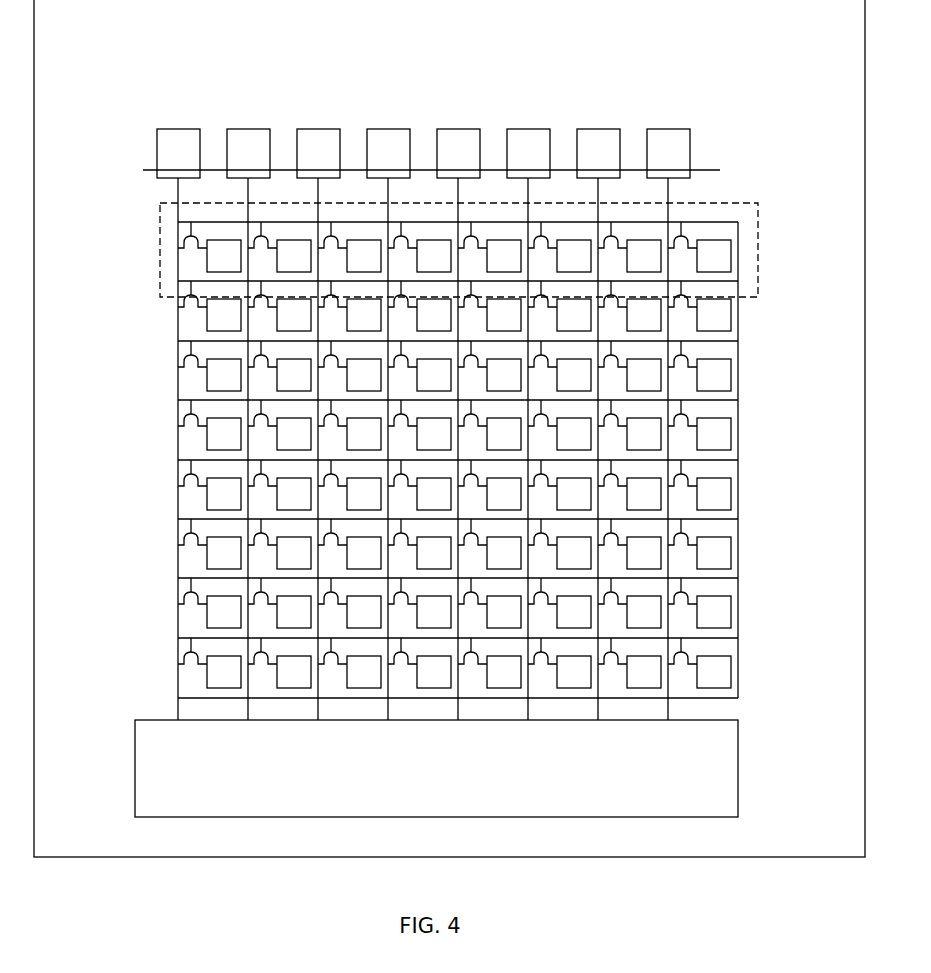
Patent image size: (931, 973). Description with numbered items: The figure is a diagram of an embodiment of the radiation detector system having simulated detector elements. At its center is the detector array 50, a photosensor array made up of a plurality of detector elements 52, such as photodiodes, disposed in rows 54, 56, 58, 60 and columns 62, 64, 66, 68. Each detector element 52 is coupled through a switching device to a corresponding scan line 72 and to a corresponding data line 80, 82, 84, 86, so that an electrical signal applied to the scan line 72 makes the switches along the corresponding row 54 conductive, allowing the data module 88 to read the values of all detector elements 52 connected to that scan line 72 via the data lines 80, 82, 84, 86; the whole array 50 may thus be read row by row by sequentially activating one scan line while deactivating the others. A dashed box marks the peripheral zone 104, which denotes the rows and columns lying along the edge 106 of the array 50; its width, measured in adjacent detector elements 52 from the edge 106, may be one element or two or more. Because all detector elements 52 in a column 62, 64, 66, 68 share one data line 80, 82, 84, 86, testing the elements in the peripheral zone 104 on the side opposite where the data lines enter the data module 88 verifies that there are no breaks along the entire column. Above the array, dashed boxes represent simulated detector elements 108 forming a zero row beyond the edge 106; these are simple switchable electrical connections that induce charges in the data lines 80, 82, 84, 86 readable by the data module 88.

The detector array 50 is at (722, 90).
The detector elements 52 is at (418, 441).
The row 54 is at (768, 257).
The row 56 is at (762, 320).
The row 58 is at (762, 380).
The row 60 is at (762, 440).
The column 62 is at (161, 113).
The column 64 is at (231, 113).
The column 66 is at (301, 113).
The column 68 is at (371, 113).
The scan line 72 is at (143, 248).
The data line 80 is at (179, 706).
The data line 82 is at (249, 706).
The data line 84 is at (319, 706).
The data line 86 is at (389, 706).
The data module 88 is at (740, 768).
The peripheral zone 104 is at (86, 240).
The edge 106 is at (488, 222).
The simulated detector elements 108 is at (177, 129).